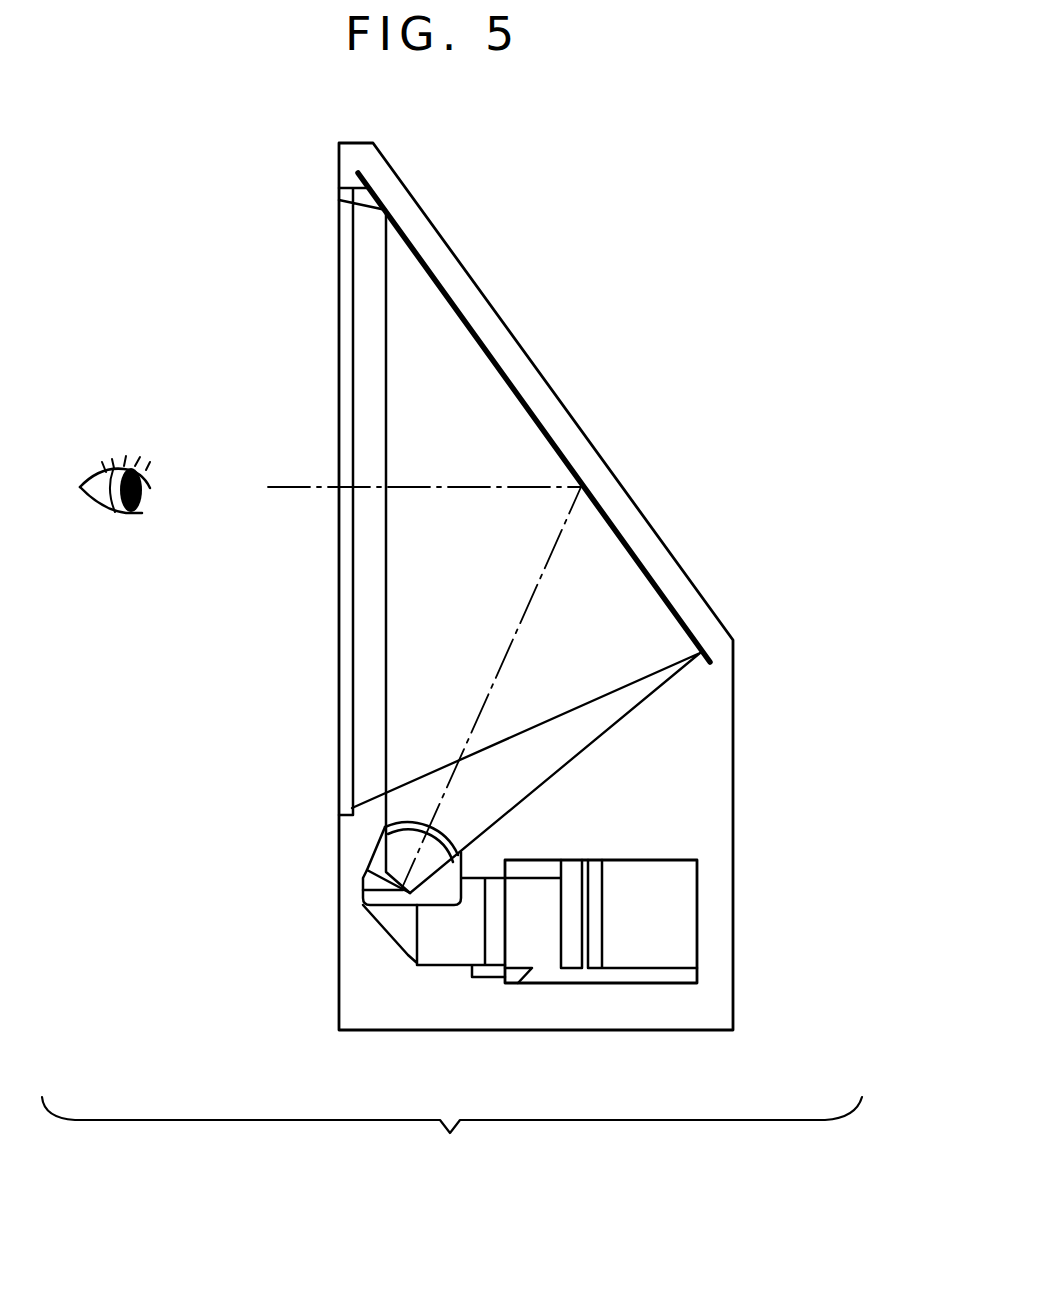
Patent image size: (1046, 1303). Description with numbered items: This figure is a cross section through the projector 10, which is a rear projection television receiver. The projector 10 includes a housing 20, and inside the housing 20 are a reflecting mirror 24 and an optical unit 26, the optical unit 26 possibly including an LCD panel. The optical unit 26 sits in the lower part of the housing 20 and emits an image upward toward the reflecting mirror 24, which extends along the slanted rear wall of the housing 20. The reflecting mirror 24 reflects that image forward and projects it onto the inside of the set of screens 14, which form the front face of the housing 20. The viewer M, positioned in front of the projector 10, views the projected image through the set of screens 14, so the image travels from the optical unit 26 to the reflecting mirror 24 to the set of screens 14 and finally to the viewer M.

The projector 10 is at (582, 586).
The set of screens 14 is at (337, 716).
The housing 20 is at (735, 790).
The reflecting mirror 24 is at (512, 377).
The optical unit 26 is at (675, 910).
The viewer M is at (107, 516).